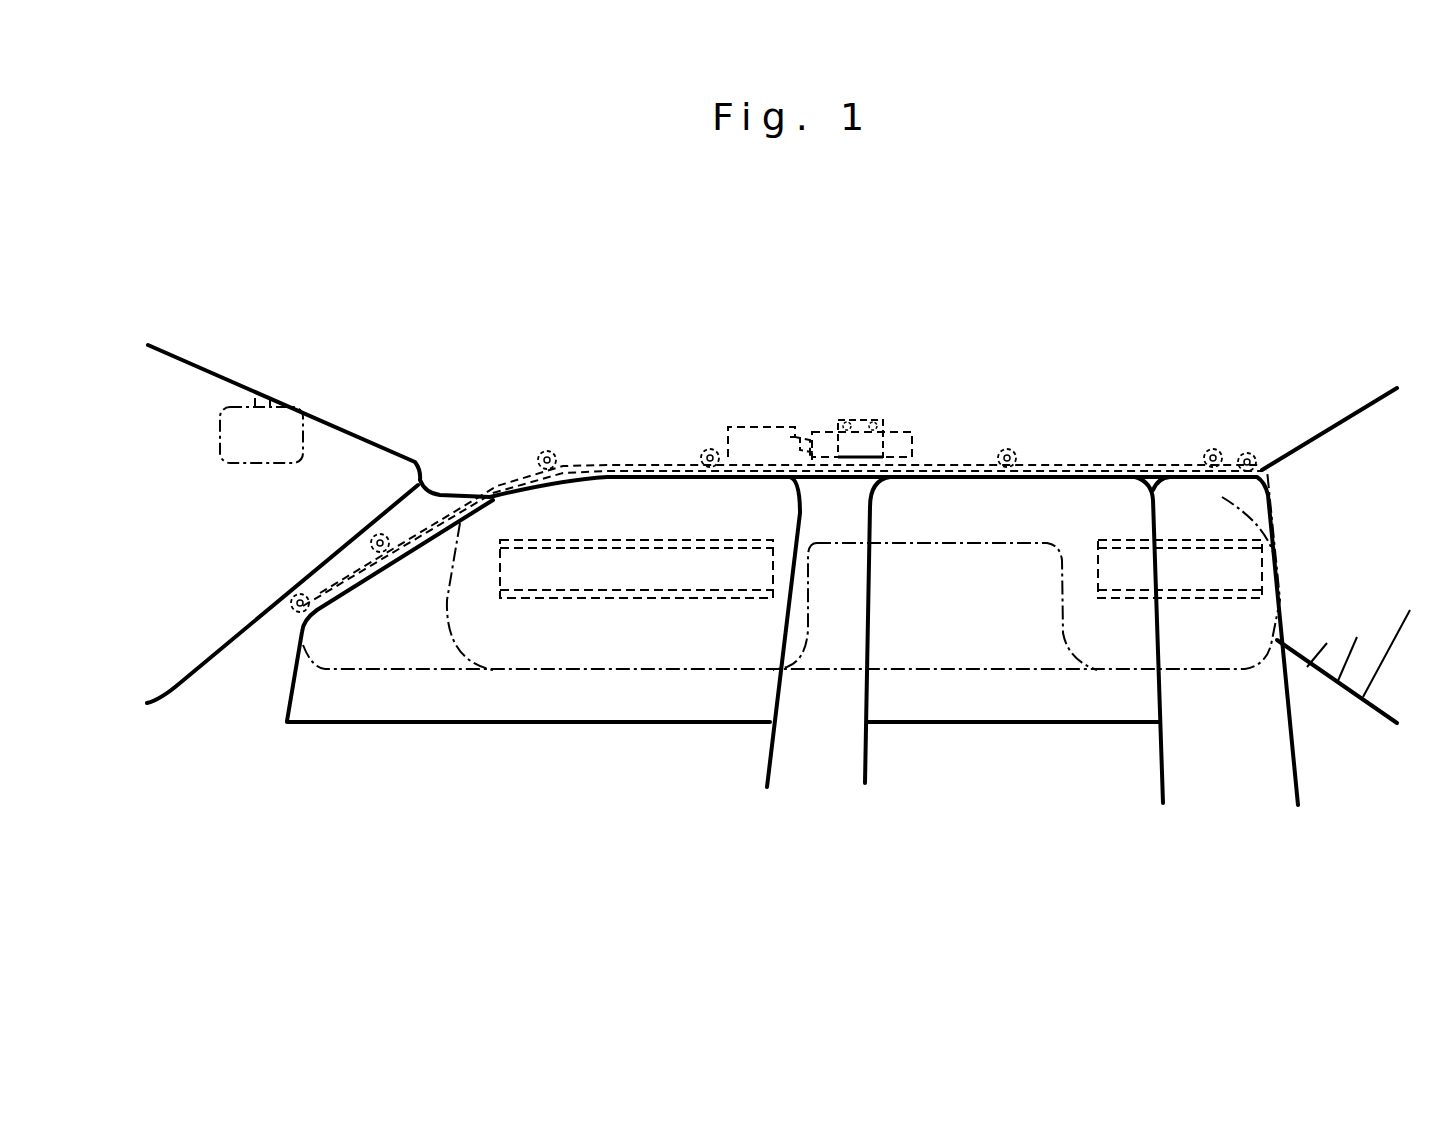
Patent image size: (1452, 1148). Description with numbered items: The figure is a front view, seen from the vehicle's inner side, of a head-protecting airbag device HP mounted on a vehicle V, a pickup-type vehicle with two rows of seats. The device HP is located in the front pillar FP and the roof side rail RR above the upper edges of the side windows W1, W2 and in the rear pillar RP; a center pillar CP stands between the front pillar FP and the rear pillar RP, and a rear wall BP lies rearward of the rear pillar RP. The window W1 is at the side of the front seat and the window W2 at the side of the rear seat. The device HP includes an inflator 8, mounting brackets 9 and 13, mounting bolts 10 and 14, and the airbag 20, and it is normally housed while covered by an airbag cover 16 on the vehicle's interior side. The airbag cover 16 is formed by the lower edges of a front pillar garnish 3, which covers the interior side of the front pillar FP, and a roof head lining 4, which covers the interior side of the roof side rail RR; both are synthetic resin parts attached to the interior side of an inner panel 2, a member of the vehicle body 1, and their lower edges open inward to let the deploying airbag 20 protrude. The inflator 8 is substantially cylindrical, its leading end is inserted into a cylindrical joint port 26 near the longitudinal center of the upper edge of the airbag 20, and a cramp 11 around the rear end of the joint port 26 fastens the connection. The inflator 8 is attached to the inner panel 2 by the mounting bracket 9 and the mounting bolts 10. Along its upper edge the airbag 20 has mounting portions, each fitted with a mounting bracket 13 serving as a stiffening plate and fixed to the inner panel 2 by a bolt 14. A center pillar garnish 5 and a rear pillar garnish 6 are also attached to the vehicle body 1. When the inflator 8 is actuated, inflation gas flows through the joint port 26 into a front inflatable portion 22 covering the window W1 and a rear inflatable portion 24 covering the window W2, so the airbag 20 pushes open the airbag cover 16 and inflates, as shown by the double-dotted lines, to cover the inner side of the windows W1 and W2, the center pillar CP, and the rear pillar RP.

The vehicle body 1 is at (640, 440).
The inner panel 2 is at (403, 523).
The front pillar garnish 3 is at (337, 567).
The roof head lining 4 is at (953, 433).
The center pillar garnish 5 is at (818, 693).
The rear pillar garnish 6 is at (1233, 628).
The inflator 8 is at (903, 447).
The mounting bracket 9 is at (857, 417).
The mounting bolt 10 is at (847, 417).
The cramp 11 is at (790, 450).
The mounting bracket 13 is at (540, 457).
The mounting bolt 14 is at (558, 457).
The airbag cover 16 is at (970, 477).
The airbag 20 is at (1102, 453).
The front inflatable portion 22 is at (636, 711).
The rear inflatable portion 24 is at (1221, 704).
The joint port 26 is at (757, 448).
The vehicle V is at (297, 288).
The front pillar FP is at (273, 567).
The center pillar CP is at (755, 690).
The rear pillar RP is at (1140, 690).
The rear wall BP is at (1350, 750).
The head-protecting airbag device HP is at (1323, 345).
The roof side rail RR is at (1053, 433).
The window W1 is at (480, 698).
The window W2 is at (938, 697).